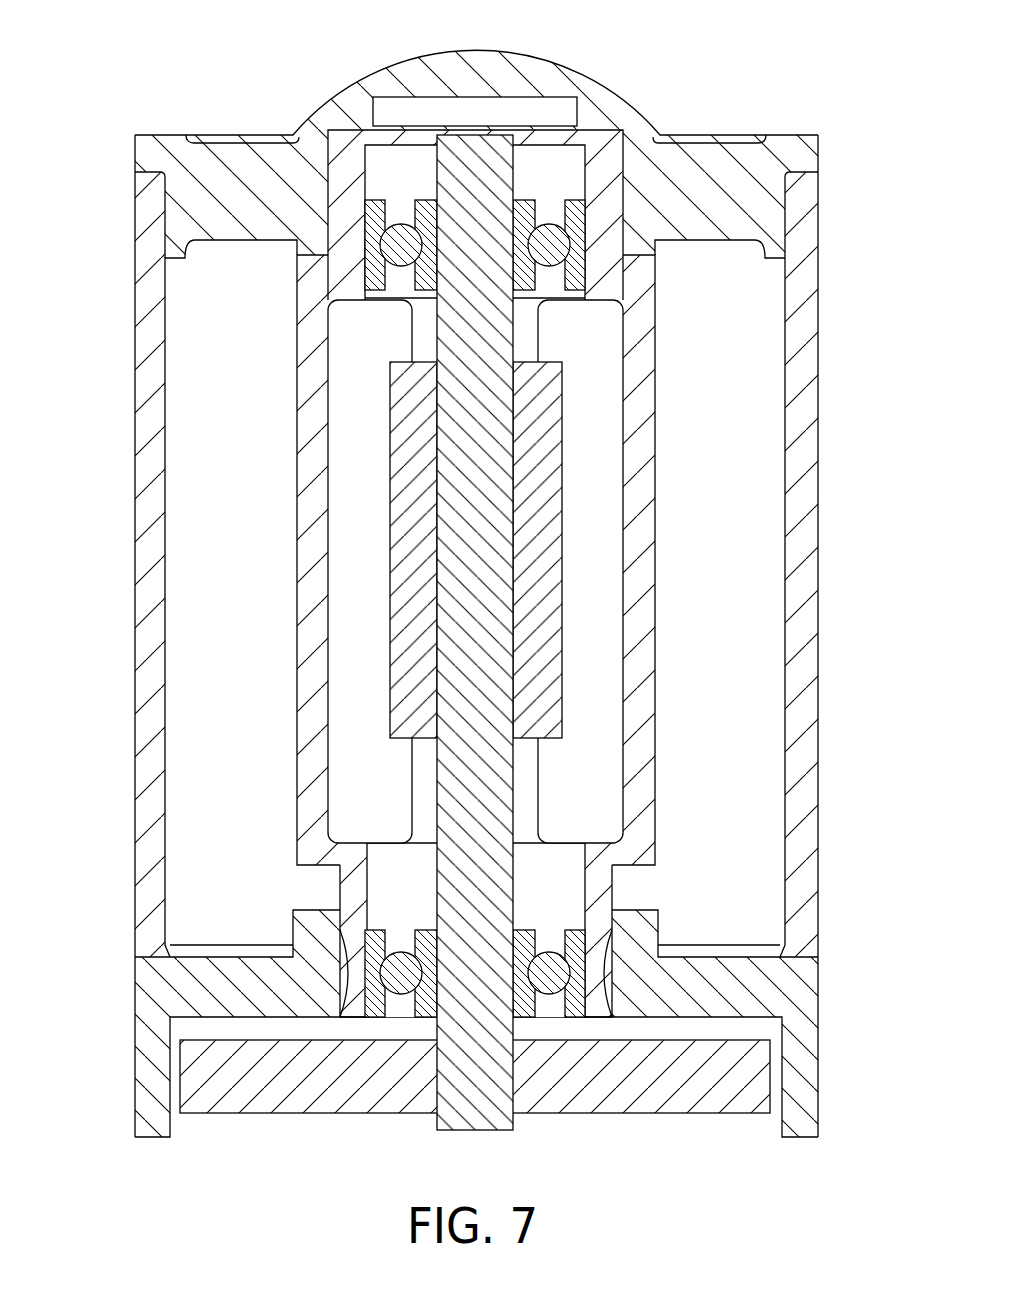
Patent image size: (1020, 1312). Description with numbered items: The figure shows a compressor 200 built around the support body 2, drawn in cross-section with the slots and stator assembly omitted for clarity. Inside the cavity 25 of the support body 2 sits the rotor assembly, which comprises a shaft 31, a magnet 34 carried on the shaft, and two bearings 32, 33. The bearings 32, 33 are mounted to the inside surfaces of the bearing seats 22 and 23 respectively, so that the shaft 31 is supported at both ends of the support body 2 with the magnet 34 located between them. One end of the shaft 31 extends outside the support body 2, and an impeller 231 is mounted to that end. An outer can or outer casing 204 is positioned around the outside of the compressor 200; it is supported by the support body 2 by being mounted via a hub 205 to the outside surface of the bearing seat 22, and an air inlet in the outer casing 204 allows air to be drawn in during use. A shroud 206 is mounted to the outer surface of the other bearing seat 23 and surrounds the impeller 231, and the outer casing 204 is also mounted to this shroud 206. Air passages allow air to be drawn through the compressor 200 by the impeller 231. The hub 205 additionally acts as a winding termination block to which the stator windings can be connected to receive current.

The compressor 200 is at (138, 47).
The hub 205 is at (422, 78).
The bearing seat 22 is at (345, 155).
The bearing 32 is at (528, 213).
The magnet 34 is at (552, 390).
The support body 2 is at (657, 515).
The outer casing 204 is at (145, 637).
The cavity 25 is at (588, 773).
The bearing seat 23 is at (602, 905).
The shroud 206 is at (812, 995).
The impeller 231 is at (312, 1113).
The shaft 31 is at (462, 1128).
The bearing 33 is at (575, 1008).